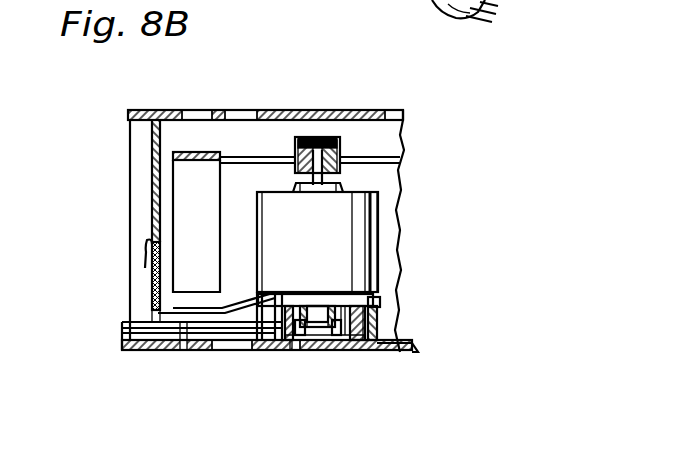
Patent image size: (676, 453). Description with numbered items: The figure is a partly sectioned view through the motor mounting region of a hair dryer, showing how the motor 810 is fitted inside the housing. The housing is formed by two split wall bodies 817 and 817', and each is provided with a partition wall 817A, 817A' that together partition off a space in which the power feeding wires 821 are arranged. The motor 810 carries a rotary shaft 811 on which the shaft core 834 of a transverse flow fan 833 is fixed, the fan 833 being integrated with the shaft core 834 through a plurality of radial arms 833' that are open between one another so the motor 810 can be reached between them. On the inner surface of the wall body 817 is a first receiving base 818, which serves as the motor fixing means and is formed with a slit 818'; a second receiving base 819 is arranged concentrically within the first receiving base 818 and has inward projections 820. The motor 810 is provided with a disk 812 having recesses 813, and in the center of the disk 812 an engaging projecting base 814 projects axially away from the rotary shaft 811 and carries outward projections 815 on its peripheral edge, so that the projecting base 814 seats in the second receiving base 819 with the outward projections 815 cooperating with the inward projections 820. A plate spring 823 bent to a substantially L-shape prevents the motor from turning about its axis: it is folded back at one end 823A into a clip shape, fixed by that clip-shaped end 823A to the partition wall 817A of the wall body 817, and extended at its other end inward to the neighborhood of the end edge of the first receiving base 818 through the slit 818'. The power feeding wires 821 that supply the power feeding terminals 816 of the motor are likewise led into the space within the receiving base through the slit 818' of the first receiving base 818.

The motor 810 is at (367, 208).
The rotary shaft 811 is at (328, 223).
The disk 812 is at (358, 288).
The recesses 813 is at (368, 302).
The engaging projecting base 814 is at (330, 342).
The outward projections 815 is at (315, 343).
The power feeding terminals 816 is at (330, 322).
The wall body 817 is at (292, 363).
The wall body 817' is at (265, 94).
The partition wall 817A is at (110, 301).
The partition wall 817A' is at (112, 230).
The first receiving base 818 is at (414, 323).
The slit 818' is at (263, 377).
The second receiving base 819 is at (368, 344).
The inward projections 820 is at (303, 310).
The power feeding wires 821 is at (132, 340).
The plate spring 823 is at (188, 350).
The clip-shaped end 823A is at (148, 263).
The transverse flow fan 833 is at (145, 226).
The radial arms 833' is at (234, 115).
The shaft core 834 is at (358, 138).